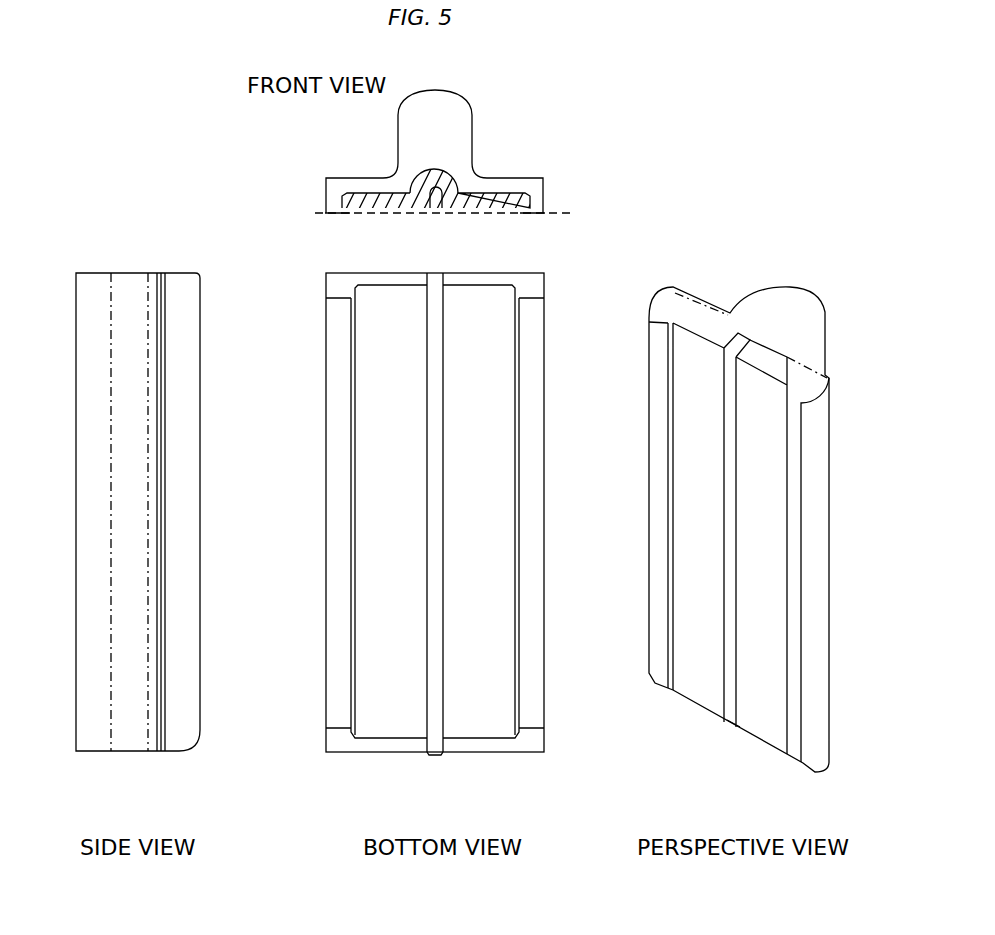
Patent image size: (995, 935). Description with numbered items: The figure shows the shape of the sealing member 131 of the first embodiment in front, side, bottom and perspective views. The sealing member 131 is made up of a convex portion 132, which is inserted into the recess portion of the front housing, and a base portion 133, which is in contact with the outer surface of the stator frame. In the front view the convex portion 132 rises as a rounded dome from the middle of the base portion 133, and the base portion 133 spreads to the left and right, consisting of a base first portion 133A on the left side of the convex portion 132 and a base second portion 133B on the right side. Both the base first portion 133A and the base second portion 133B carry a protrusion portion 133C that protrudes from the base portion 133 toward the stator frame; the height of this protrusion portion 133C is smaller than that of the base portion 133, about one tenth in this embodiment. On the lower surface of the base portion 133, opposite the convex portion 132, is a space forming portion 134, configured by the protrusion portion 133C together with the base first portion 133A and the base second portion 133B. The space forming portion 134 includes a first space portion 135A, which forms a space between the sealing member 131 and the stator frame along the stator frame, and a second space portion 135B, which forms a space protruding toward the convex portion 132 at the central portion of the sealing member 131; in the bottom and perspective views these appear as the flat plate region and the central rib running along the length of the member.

The sealing member 131 is at (712, 146).
The convex portion 132 is at (470, 100).
The base portion 133 is at (170, 298).
The base first portion 133A is at (348, 180).
The base second portion 133B is at (525, 180).
The protrusion portion 133C is at (325, 214).
The space forming portion 134 is at (410, 190).
The first space portion 135A is at (471, 212).
The second space portion 135B is at (433, 205).